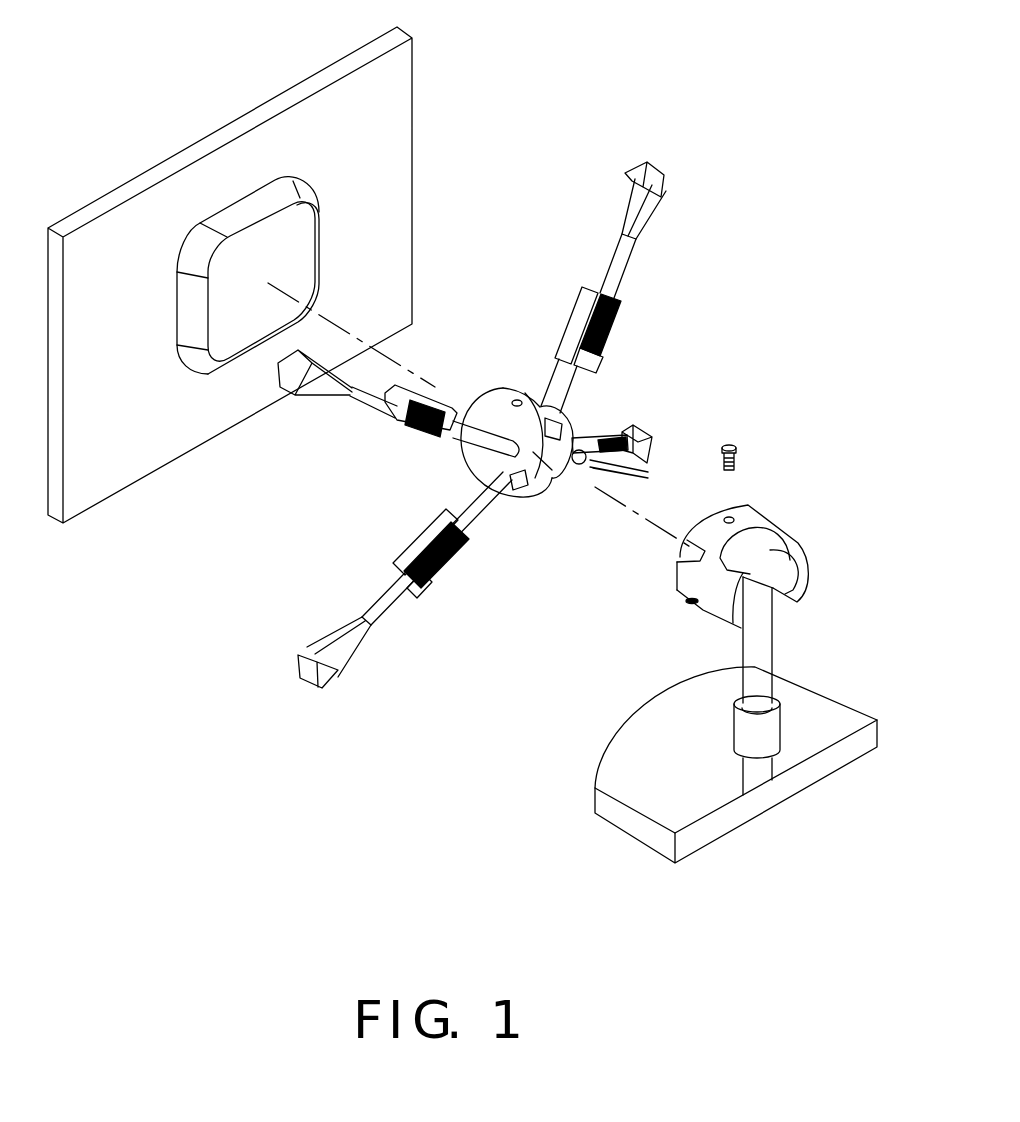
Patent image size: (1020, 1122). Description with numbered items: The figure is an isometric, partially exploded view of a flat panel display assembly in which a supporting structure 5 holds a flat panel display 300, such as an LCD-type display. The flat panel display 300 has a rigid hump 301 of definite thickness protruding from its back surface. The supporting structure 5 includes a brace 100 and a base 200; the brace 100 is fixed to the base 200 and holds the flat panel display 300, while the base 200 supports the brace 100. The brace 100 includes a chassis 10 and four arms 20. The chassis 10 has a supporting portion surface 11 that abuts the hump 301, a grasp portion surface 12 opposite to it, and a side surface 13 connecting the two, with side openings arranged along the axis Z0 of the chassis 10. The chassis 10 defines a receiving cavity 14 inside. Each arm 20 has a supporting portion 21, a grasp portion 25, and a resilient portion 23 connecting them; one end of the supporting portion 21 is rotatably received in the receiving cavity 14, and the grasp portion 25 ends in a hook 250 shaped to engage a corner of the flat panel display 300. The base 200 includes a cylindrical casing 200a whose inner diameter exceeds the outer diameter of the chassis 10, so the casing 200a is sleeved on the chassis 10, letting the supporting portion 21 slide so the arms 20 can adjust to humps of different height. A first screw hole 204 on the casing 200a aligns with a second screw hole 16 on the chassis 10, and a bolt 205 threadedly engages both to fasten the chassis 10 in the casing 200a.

The supporting structure 5 is at (682, 185).
The chassis 10 is at (514, 426).
The supporting portion surface 11 is at (460, 396).
The grasp portion surface 12 is at (533, 410).
The side surface 13 is at (465, 448).
The receiving cavity 14 is at (533, 460).
The second screw hole 16 is at (514, 399).
The arm 20 is at (425, 585).
The supporting portion 21 is at (473, 502).
The resilient portion 23 is at (455, 577).
The grasp portion 25 is at (358, 655).
The brace 100 is at (660, 150).
The base 200 is at (810, 650).
The casing 200a is at (796, 550).
The first screw hole 204 is at (732, 517).
The bolt 205 is at (738, 459).
The hook 250 is at (630, 425).
The flat panel display 300 is at (395, 128).
The hump 301 is at (260, 250).
The axis Z0 is at (641, 522).